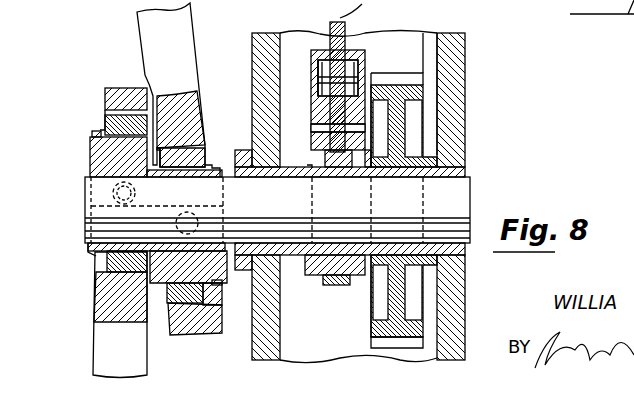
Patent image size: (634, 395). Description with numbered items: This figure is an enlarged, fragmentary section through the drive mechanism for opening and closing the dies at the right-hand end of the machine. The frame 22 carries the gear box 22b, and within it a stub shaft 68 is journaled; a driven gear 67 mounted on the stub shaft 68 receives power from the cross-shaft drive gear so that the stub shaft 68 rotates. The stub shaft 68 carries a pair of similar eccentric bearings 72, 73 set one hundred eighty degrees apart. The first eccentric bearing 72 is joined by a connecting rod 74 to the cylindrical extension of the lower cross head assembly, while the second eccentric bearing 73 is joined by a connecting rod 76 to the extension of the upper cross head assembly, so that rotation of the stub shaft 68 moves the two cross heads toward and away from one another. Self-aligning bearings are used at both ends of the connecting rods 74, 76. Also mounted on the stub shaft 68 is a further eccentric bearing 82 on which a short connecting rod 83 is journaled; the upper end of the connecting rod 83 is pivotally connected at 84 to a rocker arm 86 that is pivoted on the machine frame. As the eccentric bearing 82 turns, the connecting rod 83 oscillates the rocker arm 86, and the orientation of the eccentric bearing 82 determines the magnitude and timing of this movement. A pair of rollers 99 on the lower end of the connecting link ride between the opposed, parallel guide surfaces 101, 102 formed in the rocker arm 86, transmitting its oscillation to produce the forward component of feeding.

The stub shaft 68 is at (472, 193).
The eccentric bearing 72 is at (90, 156).
The connecting rod 76 is at (174, 46).
The connecting rod 74 is at (132, 362).
The eccentric bearing 73 is at (190, 272).
The frame 22 is at (470, 148).
The gear box 22b is at (430, 84).
The rocker arm 86 is at (312, 60).
The rollers 99 is at (320, 58).
The guide surface 102 is at (318, 93).
The pivotal connection 84 is at (312, 129).
The guide surface 101 is at (373, 73).
The driven gear 67 is at (417, 94).
The eccentric bearing 82 is at (320, 268).
The connecting rod 83 is at (347, 285).